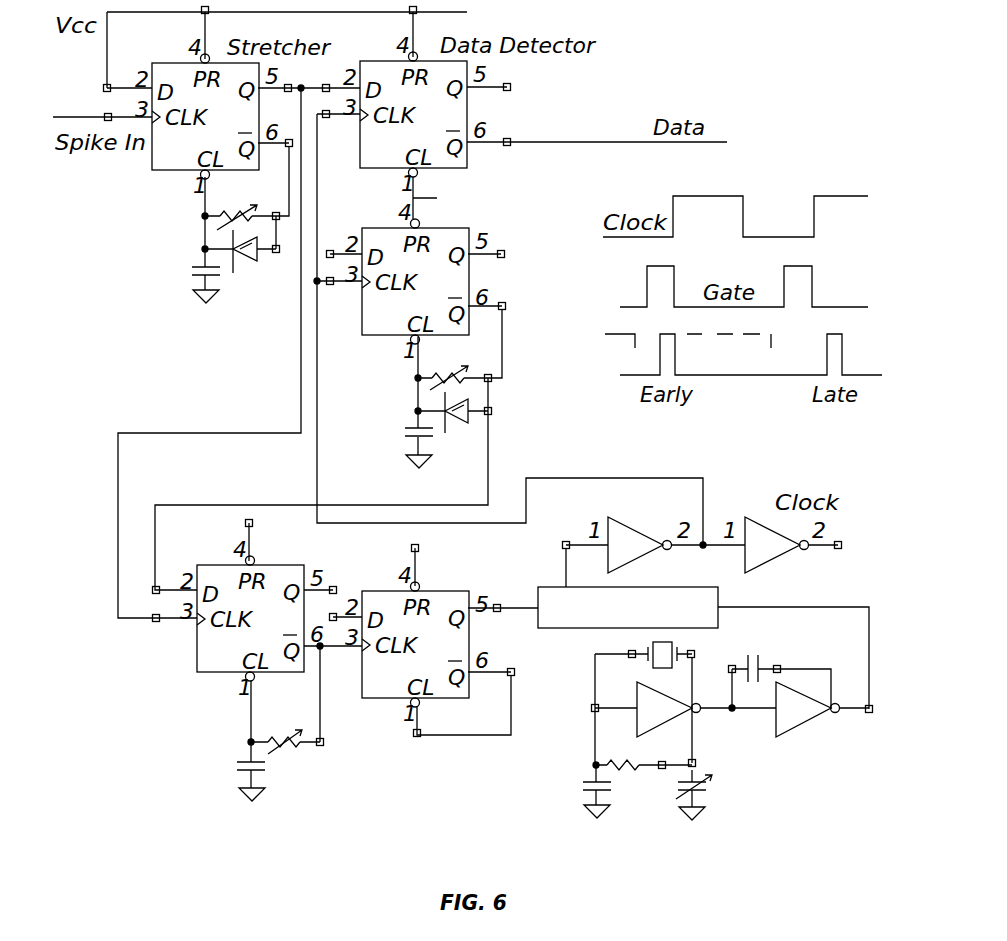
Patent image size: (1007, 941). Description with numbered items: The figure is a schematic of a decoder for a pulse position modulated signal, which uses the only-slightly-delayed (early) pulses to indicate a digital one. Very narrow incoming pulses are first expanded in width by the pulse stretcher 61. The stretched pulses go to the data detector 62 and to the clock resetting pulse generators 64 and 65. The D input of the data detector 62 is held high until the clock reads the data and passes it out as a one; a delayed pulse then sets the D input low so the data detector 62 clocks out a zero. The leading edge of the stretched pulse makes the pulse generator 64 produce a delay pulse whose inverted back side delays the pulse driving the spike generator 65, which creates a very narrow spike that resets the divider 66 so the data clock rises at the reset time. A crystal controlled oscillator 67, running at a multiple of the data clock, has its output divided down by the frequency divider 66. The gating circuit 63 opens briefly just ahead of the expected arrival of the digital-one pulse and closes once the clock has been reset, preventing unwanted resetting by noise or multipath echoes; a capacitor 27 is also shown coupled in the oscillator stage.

The pulse stretcher 61 is at (165, 173).
The data detector 62 is at (383, 170).
The gating circuit 63 is at (380, 337).
The pulse generator 64 is at (210, 675).
The spike generator 65 is at (390, 702).
The frequency divider 66 is at (670, 587).
The crystal controlled oscillator 67 is at (692, 718).
The coupling capacitor 27 is at (780, 673).